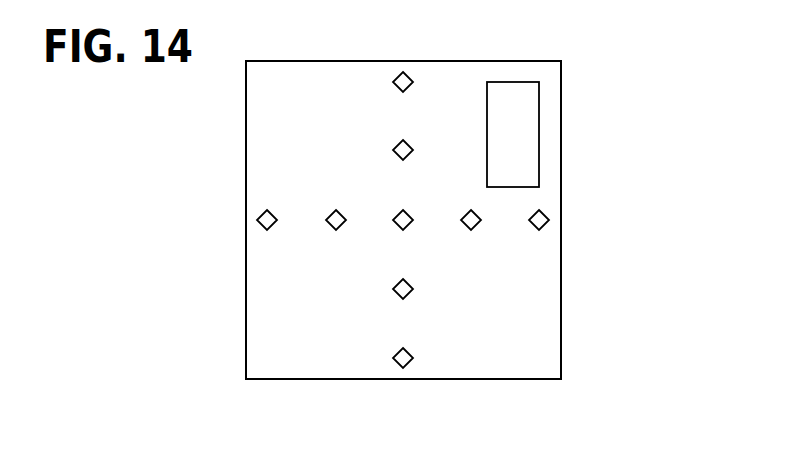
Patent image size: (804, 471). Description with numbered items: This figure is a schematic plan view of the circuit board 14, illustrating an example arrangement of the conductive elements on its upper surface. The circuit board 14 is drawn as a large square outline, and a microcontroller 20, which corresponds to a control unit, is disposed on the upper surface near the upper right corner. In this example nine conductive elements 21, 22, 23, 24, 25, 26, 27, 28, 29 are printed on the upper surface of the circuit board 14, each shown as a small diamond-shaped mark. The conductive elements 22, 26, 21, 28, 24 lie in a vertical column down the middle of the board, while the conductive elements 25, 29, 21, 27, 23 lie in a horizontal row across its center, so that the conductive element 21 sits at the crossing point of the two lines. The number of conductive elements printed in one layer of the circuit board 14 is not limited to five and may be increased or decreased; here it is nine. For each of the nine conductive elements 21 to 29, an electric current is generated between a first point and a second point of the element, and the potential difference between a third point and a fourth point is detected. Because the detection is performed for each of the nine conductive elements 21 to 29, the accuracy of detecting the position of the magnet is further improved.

The circuit board 14 is at (285, 379).
The microcontroller 20 is at (539, 100).
The conductive element 21 is at (410, 227).
The conductive element 22 is at (403, 72).
The conductive element 23 is at (546, 214).
The conductive element 24 is at (410, 364).
The conductive element 25 is at (257, 220).
The conductive element 26 is at (410, 143).
The conductive element 27 is at (478, 226).
The conductive element 28 is at (410, 296).
The conductive element 29 is at (336, 210).